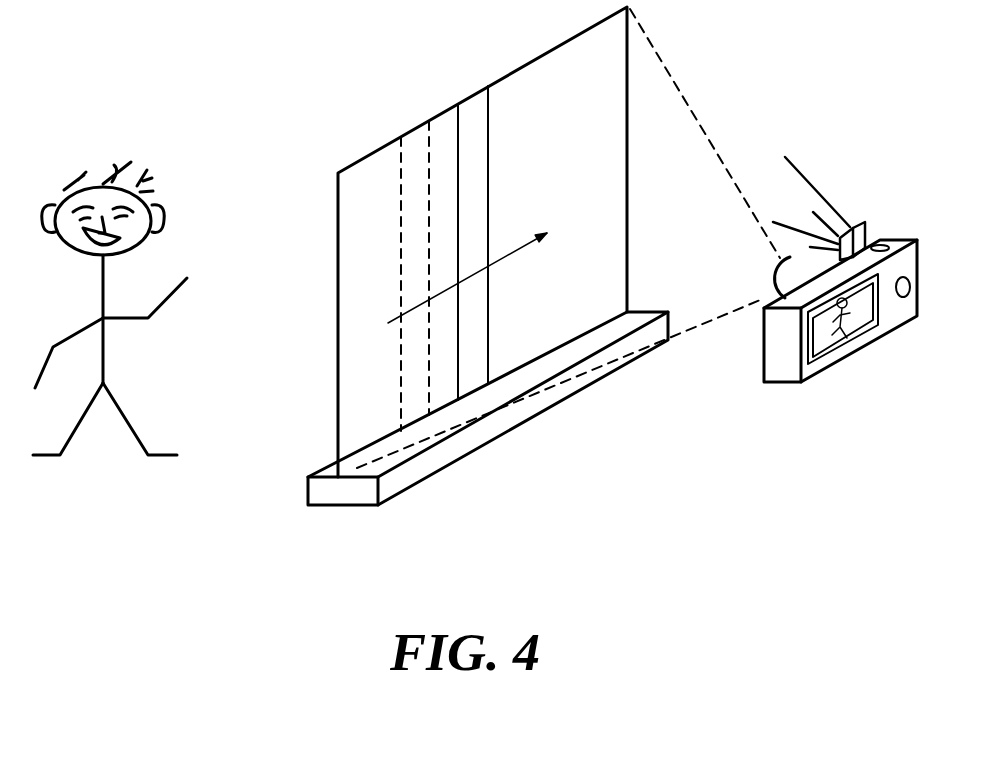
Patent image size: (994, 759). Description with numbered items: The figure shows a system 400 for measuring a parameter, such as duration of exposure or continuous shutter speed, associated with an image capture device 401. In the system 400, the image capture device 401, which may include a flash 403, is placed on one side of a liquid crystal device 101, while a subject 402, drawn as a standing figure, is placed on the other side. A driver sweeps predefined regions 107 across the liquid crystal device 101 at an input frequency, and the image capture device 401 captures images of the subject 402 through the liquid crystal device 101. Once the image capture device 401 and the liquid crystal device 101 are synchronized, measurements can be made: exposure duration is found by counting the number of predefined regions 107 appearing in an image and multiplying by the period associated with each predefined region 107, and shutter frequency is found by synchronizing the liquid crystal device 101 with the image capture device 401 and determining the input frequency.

The liquid crystal device 101 is at (358, 297).
The predefined regions 107 is at (488, 185).
The system 400 is at (696, 441).
The image capture device 401 is at (887, 318).
The subject 402 is at (105, 337).
The flash 403 is at (853, 238).